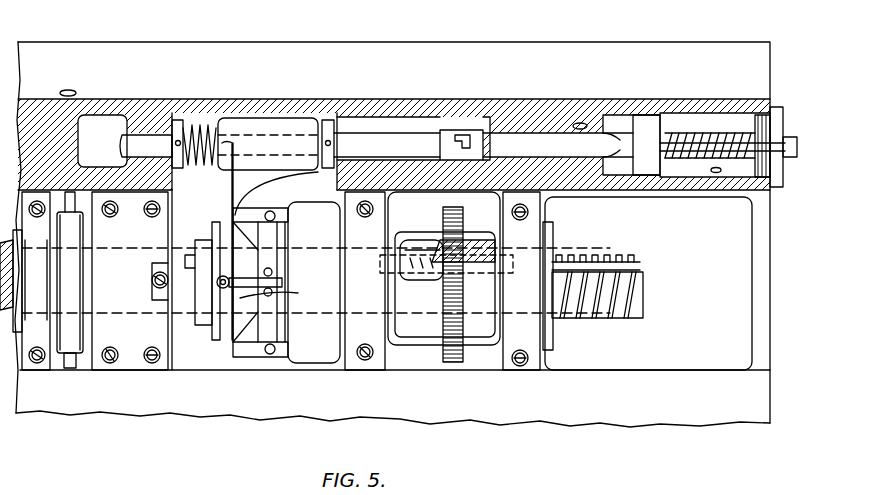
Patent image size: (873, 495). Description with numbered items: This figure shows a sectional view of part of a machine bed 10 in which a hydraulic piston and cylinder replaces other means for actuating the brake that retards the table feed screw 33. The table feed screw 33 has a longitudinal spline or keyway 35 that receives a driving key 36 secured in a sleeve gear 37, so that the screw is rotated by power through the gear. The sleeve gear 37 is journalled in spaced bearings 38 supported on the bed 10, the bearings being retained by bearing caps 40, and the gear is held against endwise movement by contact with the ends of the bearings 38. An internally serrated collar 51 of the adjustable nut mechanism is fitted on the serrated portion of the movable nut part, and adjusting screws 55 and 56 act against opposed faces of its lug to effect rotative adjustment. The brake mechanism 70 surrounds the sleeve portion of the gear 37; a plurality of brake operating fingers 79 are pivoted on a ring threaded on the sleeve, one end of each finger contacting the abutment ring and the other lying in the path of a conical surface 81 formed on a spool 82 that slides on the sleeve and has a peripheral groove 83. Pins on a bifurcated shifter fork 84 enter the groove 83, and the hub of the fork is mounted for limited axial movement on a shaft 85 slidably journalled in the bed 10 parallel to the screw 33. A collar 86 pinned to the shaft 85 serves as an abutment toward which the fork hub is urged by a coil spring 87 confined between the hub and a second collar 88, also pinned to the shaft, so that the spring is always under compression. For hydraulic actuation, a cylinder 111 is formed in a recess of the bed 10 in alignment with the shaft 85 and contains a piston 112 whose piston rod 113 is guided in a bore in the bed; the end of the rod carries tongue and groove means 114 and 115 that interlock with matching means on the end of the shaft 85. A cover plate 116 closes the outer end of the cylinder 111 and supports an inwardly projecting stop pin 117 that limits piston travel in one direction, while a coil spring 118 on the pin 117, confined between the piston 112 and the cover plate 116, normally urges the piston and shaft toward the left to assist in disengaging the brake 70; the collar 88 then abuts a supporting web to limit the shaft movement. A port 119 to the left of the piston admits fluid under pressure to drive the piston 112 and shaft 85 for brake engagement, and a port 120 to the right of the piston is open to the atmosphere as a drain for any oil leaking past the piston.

The bed 10 is at (570, 420).
The table feed screw 33 is at (638, 300).
The longitudinal spline or keyway 35 is at (610, 256).
The driving key 36 is at (418, 278).
The sleeve gear 37 is at (199, 245).
The bearings 38 is at (388, 345).
The bearing caps 40 is at (350, 230).
The internally serrated ring or collar 51 is at (66, 350).
The adjusting screw 55 is at (73, 205).
The adjusting screw 56 is at (72, 358).
The brake mechanism 70 is at (249, 370).
The brake operating fingers 79 is at (284, 280).
The conical surface 81 is at (280, 293).
The spool 82 is at (214, 330).
The peripheral groove 83 is at (224, 348).
The shifter fork 84 is at (228, 190).
The shaft 85 is at (382, 140).
The collar 86 is at (326, 120).
The coil spring 87 is at (196, 128).
The collar 88 is at (180, 125).
The cylinder 111 is at (618, 125).
The piston 112 is at (644, 128).
The piston rod 113 is at (520, 140).
The tongue means 114 is at (460, 145).
The groove means 115 is at (460, 162).
The cover plate 116 is at (772, 105).
The stop pin 117 is at (676, 165).
The coil spring 118 is at (700, 162).
The port 119 is at (577, 122).
The port 120 is at (717, 174).